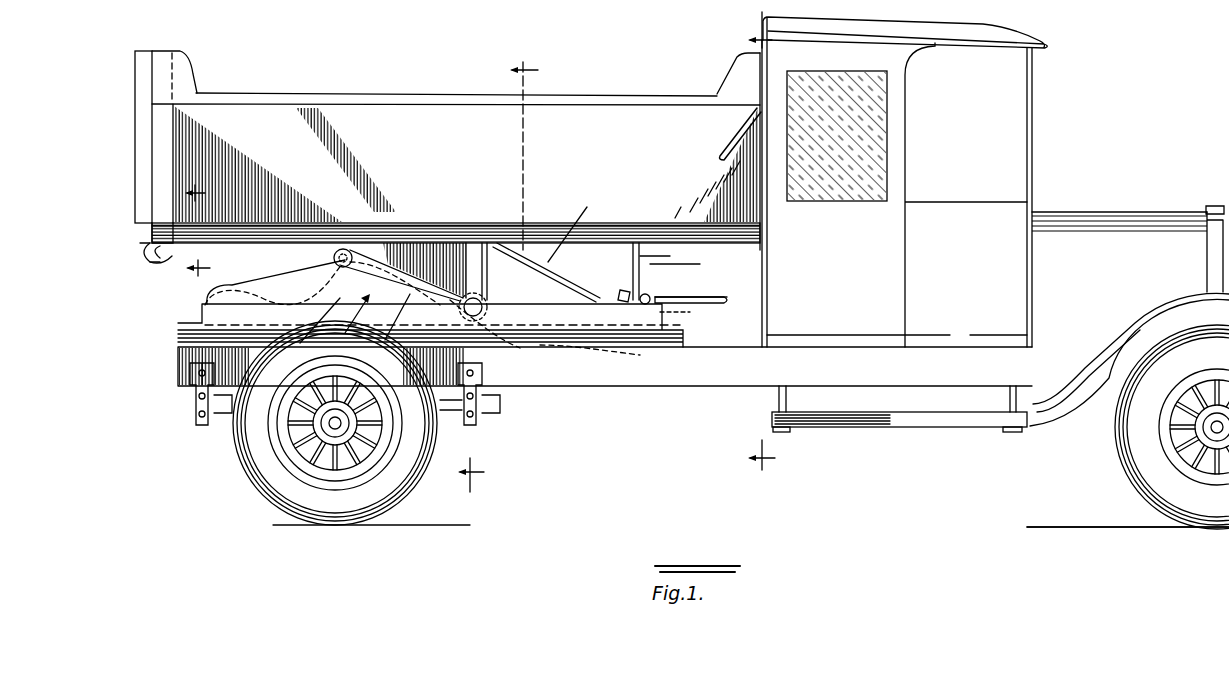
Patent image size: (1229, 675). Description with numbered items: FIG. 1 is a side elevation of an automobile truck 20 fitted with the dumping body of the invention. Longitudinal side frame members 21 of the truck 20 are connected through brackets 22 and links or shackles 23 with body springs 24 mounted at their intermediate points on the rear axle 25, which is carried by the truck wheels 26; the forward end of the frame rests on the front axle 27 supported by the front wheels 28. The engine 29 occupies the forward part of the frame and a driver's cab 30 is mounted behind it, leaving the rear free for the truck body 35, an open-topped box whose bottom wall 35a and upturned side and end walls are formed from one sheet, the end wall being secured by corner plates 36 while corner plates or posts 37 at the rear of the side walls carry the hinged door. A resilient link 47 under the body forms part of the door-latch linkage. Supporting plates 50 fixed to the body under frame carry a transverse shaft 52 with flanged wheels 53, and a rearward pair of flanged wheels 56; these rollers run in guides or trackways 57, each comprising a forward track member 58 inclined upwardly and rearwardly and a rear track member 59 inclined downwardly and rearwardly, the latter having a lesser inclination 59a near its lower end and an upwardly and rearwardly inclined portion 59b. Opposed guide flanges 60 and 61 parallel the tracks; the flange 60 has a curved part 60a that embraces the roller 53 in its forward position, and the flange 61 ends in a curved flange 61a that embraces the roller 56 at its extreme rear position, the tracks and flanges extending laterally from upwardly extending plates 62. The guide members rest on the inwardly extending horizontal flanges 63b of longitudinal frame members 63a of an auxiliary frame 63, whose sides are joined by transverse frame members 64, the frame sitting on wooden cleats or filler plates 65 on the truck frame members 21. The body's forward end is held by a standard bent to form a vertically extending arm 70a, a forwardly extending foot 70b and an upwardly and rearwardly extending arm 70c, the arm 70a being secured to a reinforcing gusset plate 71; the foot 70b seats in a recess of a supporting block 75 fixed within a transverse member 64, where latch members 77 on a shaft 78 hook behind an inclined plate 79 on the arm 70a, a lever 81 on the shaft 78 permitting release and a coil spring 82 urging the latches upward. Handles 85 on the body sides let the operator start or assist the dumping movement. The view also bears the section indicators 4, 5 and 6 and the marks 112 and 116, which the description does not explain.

The section line 4 is at (763, 241).
The section line 5 is at (500, 270).
The section line 6 is at (198, 230).
The automobile truck 20 is at (760, 387).
The longitudinal side frame members 21 is at (630, 392).
The brackets 22 is at (190, 380).
The links or shackles 23 is at (528, 430).
The body springs 24 is at (470, 430).
The rear axle 25 is at (330, 430).
The truck wheels 26 is at (395, 500).
The front axle 27 is at (1212, 428).
The front wheels 28 is at (1150, 505).
The engine 29 is at (1125, 232).
The driver's cab 30 is at (897, 170).
The truck body 35 is at (402, 90).
The bottom wall 35a is at (430, 133).
The corner plates 36 is at (740, 62).
The corner plates or posts 37 is at (194, 82).
The link of resilient material 47 is at (180, 250).
The supporting plates 50 is at (500, 233).
The transverse shaft 52 is at (346, 228).
The flanged wheels 53 is at (462, 312).
The flanged wheels 56 is at (355, 240).
The guides or trackways 57 is at (348, 325).
The forward track member 58 is at (383, 331).
The rear track member 59 is at (290, 290).
The lesser inclination portion of rear track 59a is at (273, 378).
The upwardly and rearwardly inclined portion of rear track 59b is at (194, 343).
The guide flange 60 is at (497, 245).
The curved part 60a is at (525, 284).
The guide flange 61 is at (322, 222).
The curved flange 61a is at (442, 291).
The upwardly extending plates 62 is at (307, 330).
The auxiliary frame 63 is at (546, 272).
The longitudinal frame members 63a is at (580, 314).
The inwardly extending horizontal flanges 63b is at (590, 358).
The transverse frame members 64 is at (202, 318).
The wooden cleats or filler plates 65 is at (645, 340).
The vertically extending arm 70a is at (693, 262).
The forwardly extending foot 70b is at (614, 401).
The upwardly and rearwardly extending arm 70c is at (577, 220).
The reinforcing gusset plate 71 is at (668, 255).
The supporting block 75 is at (690, 313).
The latch members 77 is at (600, 292).
The shaft 78 is at (664, 298).
The plate 79 is at (625, 290).
The lever 81 is at (702, 288).
The coil spring 82 is at (652, 284).
The handles 85 is at (718, 152).
The hook 112 is at (142, 252).
The hook pin 116 is at (158, 266).